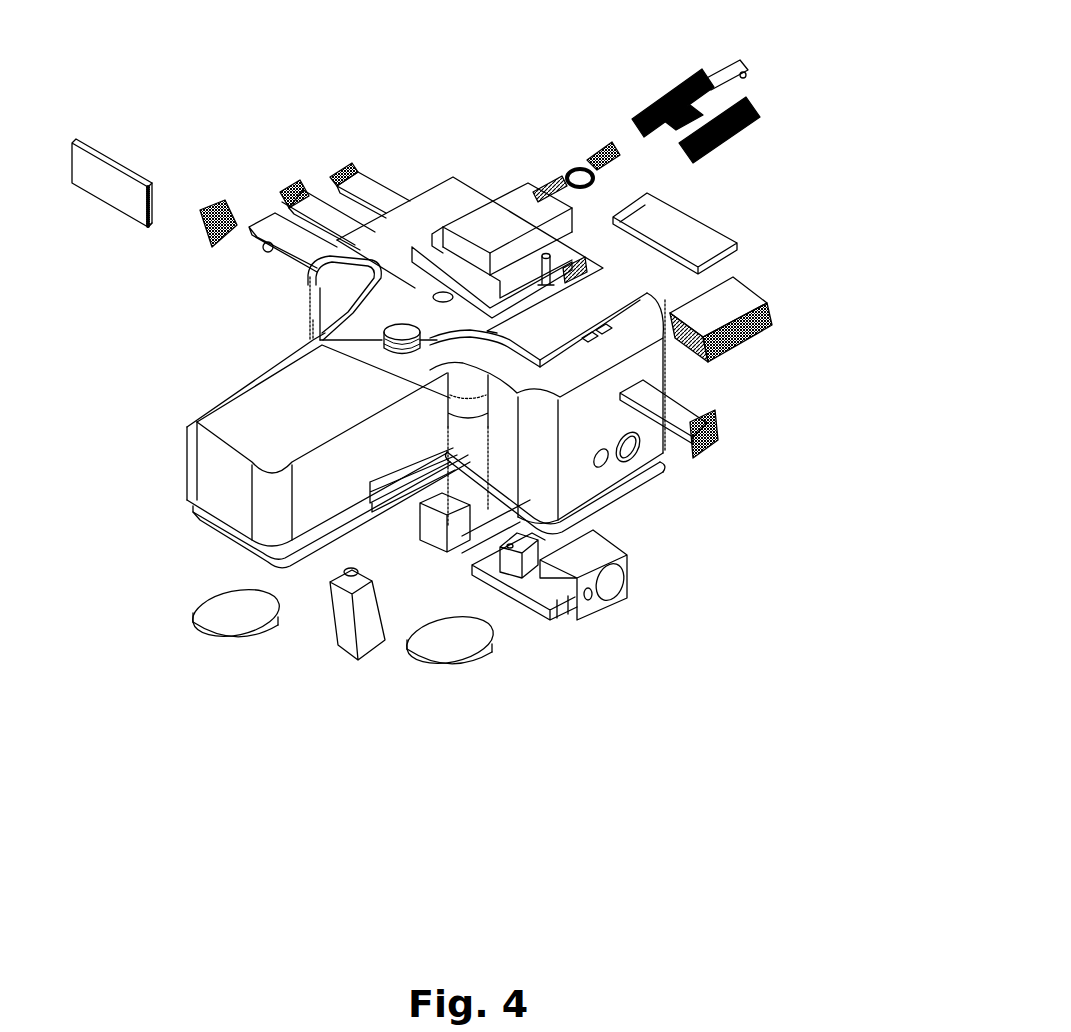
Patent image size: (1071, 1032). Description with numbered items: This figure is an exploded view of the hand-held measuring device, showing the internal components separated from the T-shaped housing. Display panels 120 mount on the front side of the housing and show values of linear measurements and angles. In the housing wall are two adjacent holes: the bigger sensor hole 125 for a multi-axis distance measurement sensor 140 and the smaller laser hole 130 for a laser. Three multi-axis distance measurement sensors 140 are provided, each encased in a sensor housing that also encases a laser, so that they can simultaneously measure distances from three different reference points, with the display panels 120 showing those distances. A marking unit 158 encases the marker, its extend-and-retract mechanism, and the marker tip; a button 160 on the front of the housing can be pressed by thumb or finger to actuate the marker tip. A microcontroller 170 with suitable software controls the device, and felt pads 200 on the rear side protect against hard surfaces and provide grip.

The display panel 120 is at (295, 192).
The sensor hole 125 is at (652, 455).
The laser hole 130 is at (604, 470).
The multi-axis distance measurement sensor 140 is at (510, 183).
The marking unit 158 is at (355, 647).
The button 160 is at (320, 340).
The microcontroller 170 is at (743, 288).
The felt pad 200 is at (240, 642).